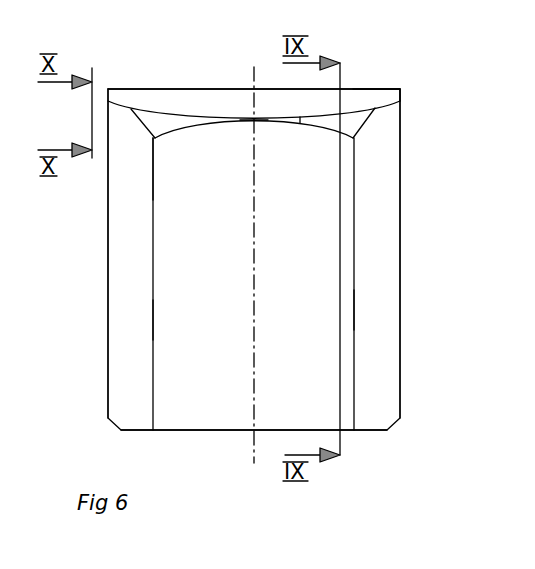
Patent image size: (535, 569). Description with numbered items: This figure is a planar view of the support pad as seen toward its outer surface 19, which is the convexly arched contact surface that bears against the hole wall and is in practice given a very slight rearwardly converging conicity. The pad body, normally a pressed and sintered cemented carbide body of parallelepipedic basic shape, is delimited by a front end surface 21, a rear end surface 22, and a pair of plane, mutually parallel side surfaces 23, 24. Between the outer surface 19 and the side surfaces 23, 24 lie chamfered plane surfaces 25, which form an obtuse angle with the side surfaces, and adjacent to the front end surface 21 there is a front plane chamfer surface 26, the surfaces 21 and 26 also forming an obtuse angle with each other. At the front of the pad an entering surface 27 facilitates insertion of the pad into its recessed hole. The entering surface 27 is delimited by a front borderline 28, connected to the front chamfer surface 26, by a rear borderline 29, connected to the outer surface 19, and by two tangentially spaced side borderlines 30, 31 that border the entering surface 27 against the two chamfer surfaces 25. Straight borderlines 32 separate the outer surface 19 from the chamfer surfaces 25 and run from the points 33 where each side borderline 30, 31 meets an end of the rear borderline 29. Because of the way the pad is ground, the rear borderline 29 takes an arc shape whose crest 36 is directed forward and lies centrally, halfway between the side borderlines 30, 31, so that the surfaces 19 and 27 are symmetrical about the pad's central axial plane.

The outer surface 19 is at (295, 280).
The front end surface 21 is at (207, 88).
The rear end surface 22 is at (235, 430).
The side surface 23 is at (106, 312).
The side surface 24 is at (400, 312).
The chamfer surface 25 is at (142, 260).
The front chamfer surface 26 is at (367, 99).
The entering surface 27 is at (328, 121).
The front borderline 28 is at (161, 110).
The rear borderline 29 is at (205, 126).
The side borderline 30 is at (142, 126).
The side borderline 31 is at (368, 119).
The straight borderline 32 is at (153, 318).
The point 33 is at (157, 142).
The crest 36 is at (257, 123).